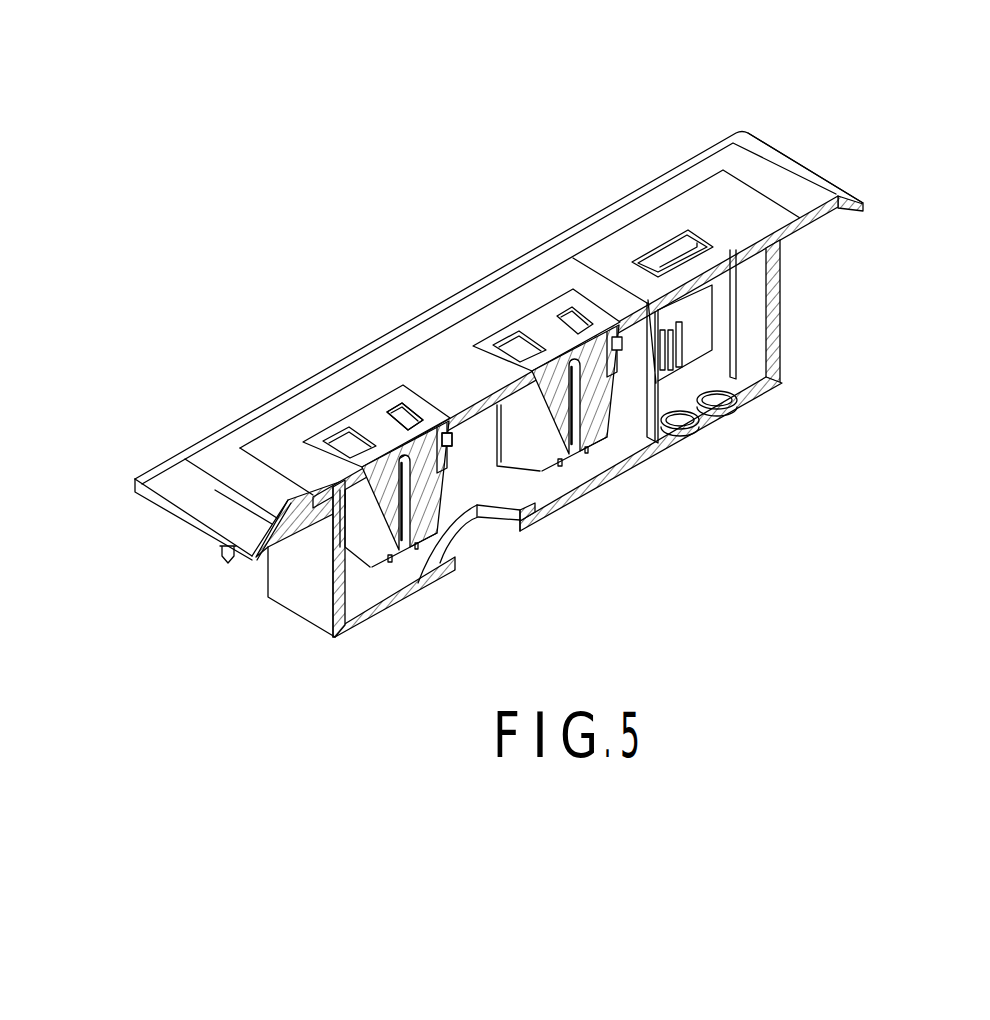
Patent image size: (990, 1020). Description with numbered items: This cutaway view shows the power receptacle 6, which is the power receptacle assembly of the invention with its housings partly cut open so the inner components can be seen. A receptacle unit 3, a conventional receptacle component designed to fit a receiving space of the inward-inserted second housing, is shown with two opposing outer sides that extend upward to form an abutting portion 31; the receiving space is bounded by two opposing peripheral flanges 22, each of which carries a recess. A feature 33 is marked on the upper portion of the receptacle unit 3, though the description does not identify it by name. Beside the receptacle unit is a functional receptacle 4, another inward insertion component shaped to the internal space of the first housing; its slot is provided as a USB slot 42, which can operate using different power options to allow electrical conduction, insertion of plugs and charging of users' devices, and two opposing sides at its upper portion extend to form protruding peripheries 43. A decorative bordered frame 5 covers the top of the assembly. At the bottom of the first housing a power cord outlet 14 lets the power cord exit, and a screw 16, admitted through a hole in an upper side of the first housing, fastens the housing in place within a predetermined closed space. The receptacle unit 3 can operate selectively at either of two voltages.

The receptacle unit 3 is at (370, 423).
The abutting portion 31 is at (328, 517).
The terminal insertion slot 33 is at (408, 417).
The functional receptacle 4 is at (706, 204).
The USB slot 42 is at (653, 257).
The protruding peripheries 43 is at (782, 232).
The decorative bordered frame 5 is at (783, 188).
The power receptacle 6 is at (875, 178).
The power cord outlet 14 is at (483, 543).
The screw 16 is at (232, 553).
The peripheral flanges 22 is at (440, 437).